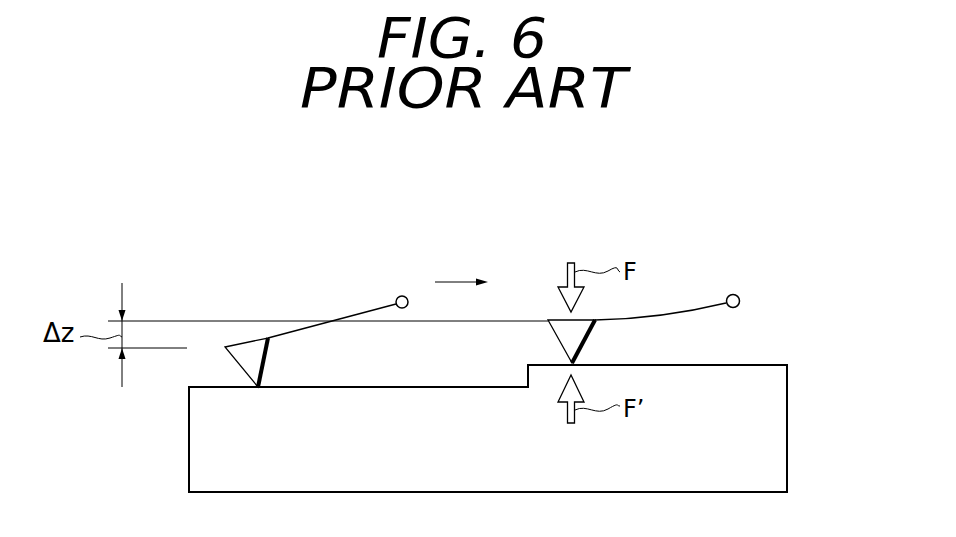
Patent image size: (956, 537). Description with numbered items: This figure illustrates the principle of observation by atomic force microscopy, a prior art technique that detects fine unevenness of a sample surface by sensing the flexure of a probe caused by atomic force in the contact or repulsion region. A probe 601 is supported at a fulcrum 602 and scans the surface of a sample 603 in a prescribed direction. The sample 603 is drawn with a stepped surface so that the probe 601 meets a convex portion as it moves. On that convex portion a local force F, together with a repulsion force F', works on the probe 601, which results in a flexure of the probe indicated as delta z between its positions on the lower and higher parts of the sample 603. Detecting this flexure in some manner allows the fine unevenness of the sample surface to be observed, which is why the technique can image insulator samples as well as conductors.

The probe 601 is at (268, 362).
The fulcrum 602 is at (399, 297).
The sample 603 is at (770, 390).